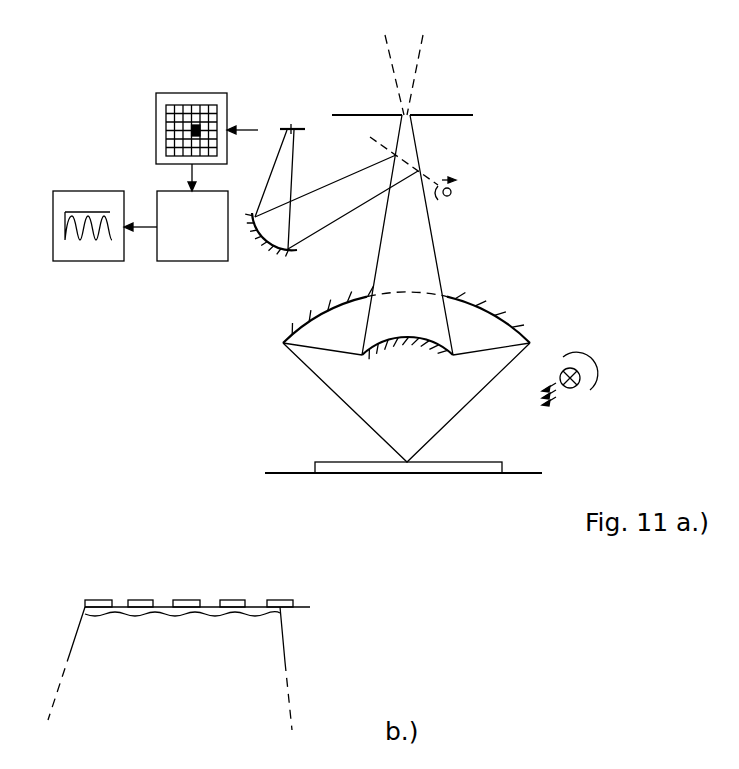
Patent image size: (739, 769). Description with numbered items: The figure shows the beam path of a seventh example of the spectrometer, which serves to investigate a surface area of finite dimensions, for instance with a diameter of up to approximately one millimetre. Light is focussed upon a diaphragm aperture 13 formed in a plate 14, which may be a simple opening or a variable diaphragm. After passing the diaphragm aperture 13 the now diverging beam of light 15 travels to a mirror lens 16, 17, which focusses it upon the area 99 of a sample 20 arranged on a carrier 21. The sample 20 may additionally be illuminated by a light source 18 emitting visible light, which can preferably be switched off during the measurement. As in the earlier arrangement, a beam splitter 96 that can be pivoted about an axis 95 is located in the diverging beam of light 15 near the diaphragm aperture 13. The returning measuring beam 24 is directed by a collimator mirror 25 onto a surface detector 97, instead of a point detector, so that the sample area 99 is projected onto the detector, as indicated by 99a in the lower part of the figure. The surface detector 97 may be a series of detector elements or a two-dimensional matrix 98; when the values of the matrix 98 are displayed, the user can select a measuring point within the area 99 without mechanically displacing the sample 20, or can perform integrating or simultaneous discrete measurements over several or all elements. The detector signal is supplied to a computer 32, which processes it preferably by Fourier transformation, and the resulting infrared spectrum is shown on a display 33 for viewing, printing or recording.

In FIG. 11a, the diaphragm aperture 13 is at (412, 92).
In FIG. 11a, the plate 14 is at (463, 116).
In FIG. 11a, the diverging beam of light 15 is at (430, 247).
In FIG. 11a, the mirror lens 16 is at (418, 349).
In FIG. 11a, the mirror lens 17 is at (484, 296).
In FIG. 11a, the light source 18 is at (577, 388).
In FIG. 11a, the sample 20 is at (345, 466).
In FIG. 11a, the carrier 21 is at (285, 470).
In FIG. 11a, the reflected beam 24 is at (360, 182).
In FIG. 11a, the collimator mirror 25 is at (281, 253).
In FIG. 11a, the computer 32 is at (207, 262).
In FIG. 11a, the display 33 is at (98, 262).
In FIG. 11a, the axis 95 is at (452, 194).
In FIG. 11a, the beam splitter 96 is at (432, 174).
In FIG. 11a, the surface detector 97 is at (293, 127).
In FIG. 11b, the surface detector 97 is at (291, 594).
In FIG. 11a, the matrix 98 is at (197, 104).
In FIG. 11a, the area 99 is at (413, 457).
In FIG. 11b, the projected sample area 99a is at (250, 614).